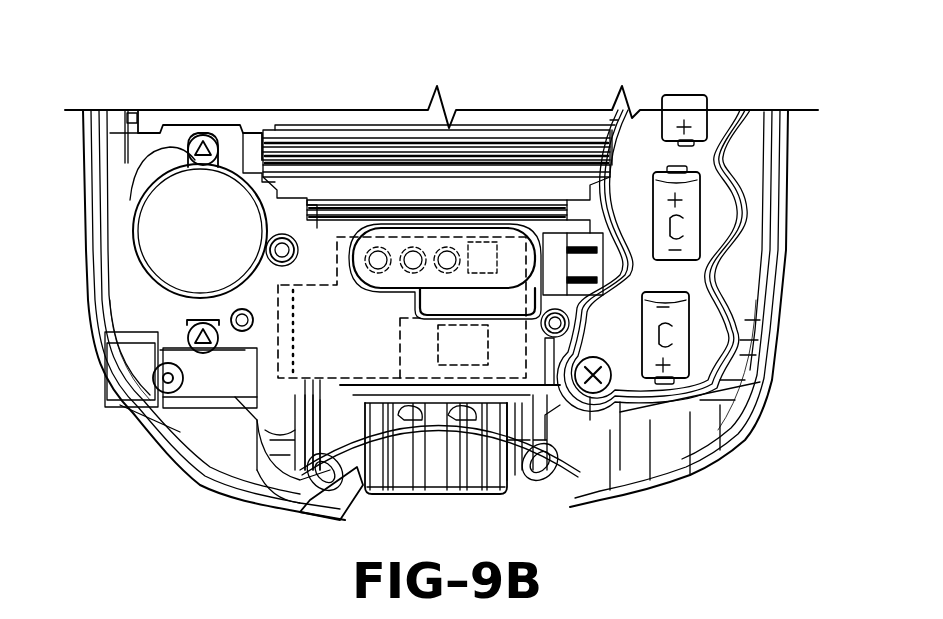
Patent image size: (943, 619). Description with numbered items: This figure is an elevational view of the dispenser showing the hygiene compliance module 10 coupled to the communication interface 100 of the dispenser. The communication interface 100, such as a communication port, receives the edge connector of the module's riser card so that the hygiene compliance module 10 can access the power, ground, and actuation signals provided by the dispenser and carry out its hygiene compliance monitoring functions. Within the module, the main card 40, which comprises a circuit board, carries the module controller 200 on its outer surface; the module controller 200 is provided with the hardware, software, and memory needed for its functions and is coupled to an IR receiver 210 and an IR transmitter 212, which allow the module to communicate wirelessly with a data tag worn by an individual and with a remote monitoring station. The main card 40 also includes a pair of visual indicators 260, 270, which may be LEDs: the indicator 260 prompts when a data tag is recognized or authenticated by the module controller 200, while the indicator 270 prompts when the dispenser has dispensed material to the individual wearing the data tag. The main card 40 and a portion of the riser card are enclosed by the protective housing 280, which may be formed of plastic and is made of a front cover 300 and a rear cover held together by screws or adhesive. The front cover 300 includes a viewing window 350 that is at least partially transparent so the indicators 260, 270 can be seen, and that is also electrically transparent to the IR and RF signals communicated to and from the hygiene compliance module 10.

The communication interface 100 is at (790, 220).
The module controller 200 is at (438, 345).
The IR receiver 210 is at (490, 255).
The IR transmitter 212 is at (378, 255).
The visual indicator 260 is at (413, 255).
The visual indicator 270 is at (447, 255).
The viewing window 350 is at (507, 257).
The hygiene compliance module 10 is at (380, 390).
The protective housing 280 is at (450, 390).
The main card 40 is at (355, 363).
The front cover 300 is at (300, 387).